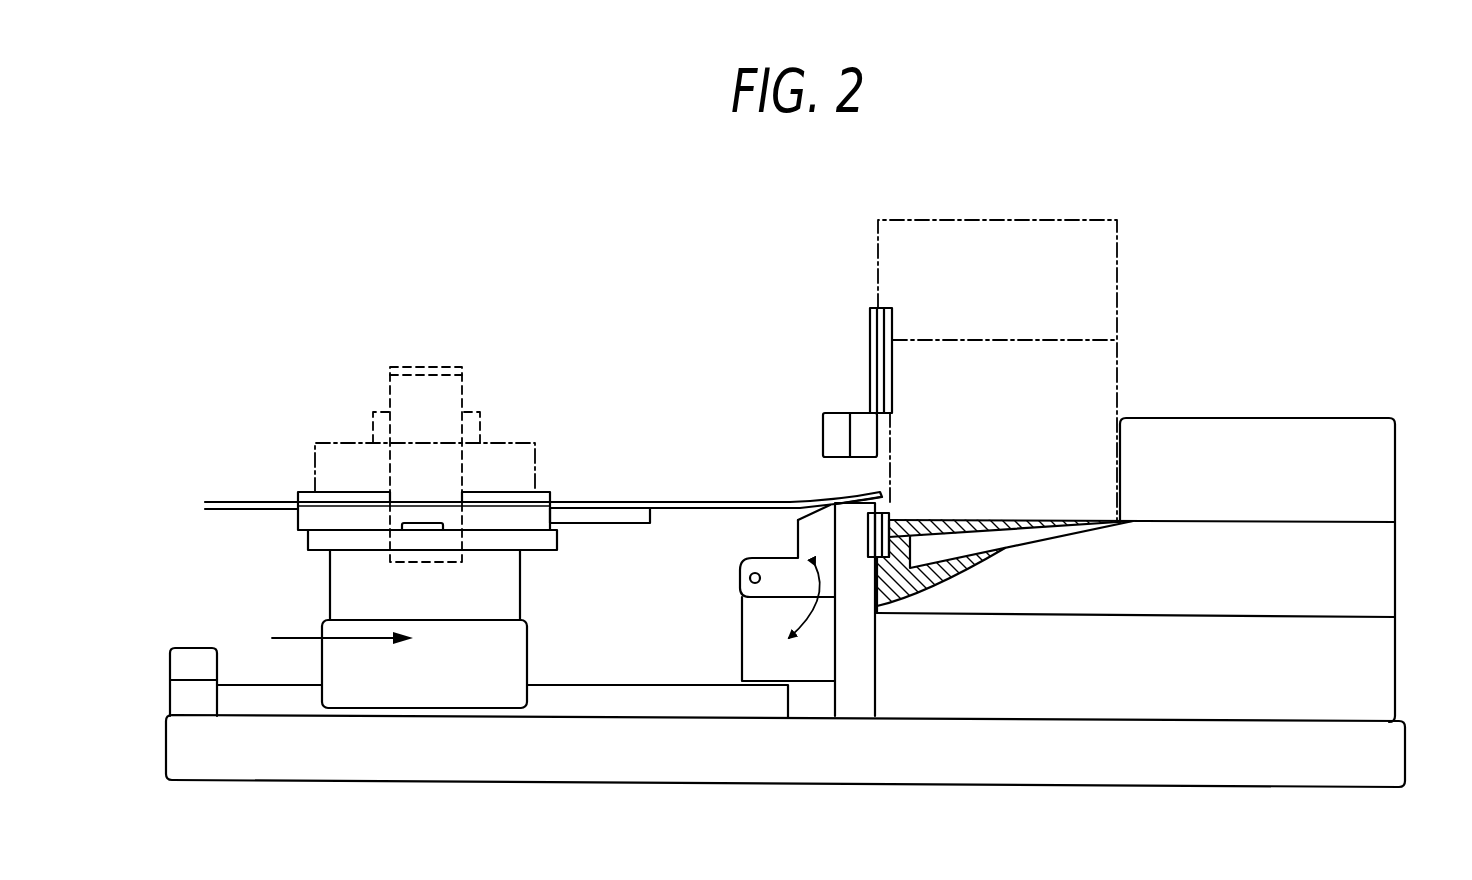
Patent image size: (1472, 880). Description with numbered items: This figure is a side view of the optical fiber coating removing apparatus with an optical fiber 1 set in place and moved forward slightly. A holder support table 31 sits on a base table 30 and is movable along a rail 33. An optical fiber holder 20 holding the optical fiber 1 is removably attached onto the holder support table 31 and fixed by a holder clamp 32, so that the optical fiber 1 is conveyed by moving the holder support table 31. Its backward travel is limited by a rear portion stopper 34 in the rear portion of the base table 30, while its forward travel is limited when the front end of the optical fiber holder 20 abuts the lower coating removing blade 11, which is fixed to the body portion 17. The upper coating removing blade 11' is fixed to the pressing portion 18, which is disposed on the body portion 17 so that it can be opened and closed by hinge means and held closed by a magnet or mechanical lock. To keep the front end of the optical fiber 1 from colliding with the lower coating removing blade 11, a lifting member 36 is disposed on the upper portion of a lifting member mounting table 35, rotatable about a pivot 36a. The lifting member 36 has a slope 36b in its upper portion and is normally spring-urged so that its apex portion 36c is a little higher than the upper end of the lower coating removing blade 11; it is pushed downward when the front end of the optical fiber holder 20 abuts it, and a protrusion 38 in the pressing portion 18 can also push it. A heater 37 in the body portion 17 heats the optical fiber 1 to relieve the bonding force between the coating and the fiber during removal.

The optical fiber 1 is at (255, 500).
The lower coating removing blade 11 is at (906, 505).
The upper coating removing blade 11' is at (912, 333).
The body portion 17 is at (1388, 572).
The pressing portion 18 is at (1118, 270).
The optical fiber holder 20 is at (541, 492).
The base table 30 is at (655, 772).
The holder support table 31 is at (340, 586).
The holder clamp 32 is at (462, 386).
The rail 33 is at (594, 695).
The rear portion stopper 34 is at (178, 697).
The lifting member mounting table 35 is at (820, 643).
The lifting member 36 is at (772, 560).
The pivot 36a is at (749, 578).
The slope 36b is at (807, 512).
The apex portion 36c is at (830, 505).
The heater 37 is at (948, 550).
The protrusion 38 is at (836, 413).